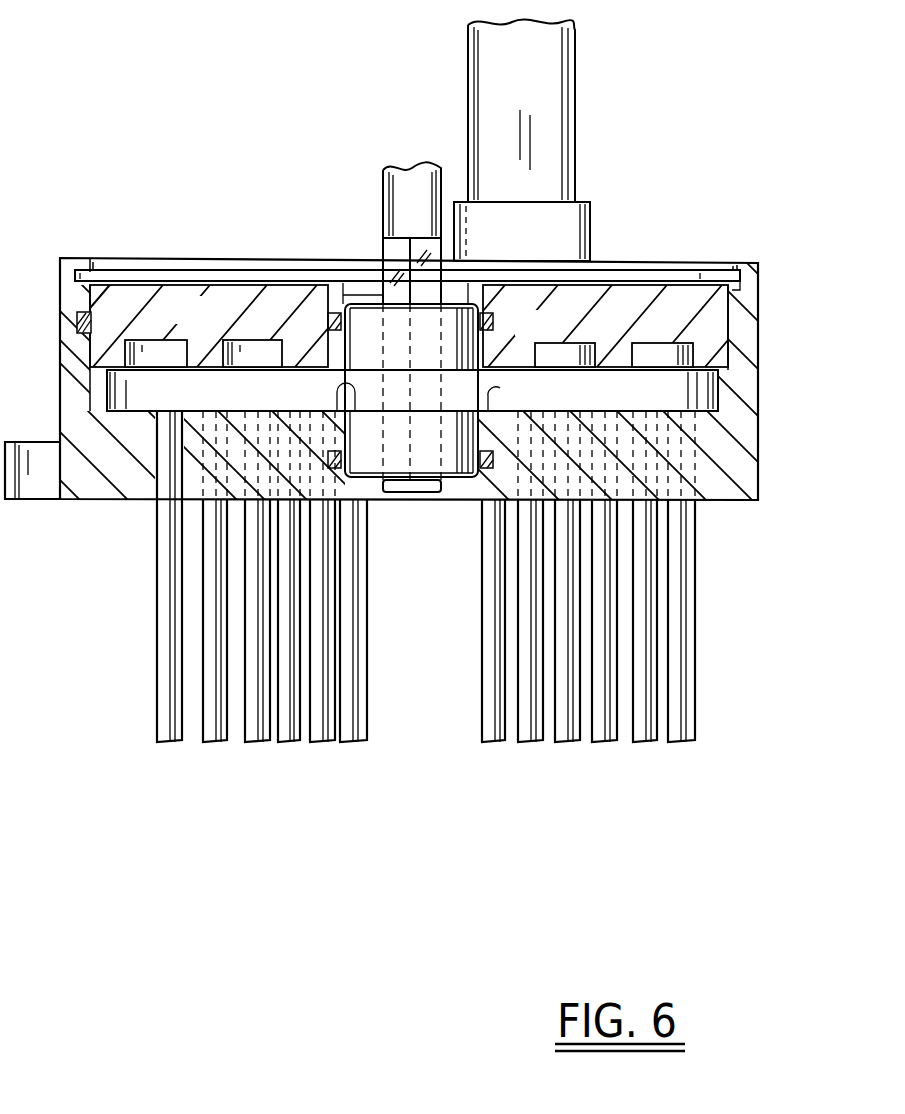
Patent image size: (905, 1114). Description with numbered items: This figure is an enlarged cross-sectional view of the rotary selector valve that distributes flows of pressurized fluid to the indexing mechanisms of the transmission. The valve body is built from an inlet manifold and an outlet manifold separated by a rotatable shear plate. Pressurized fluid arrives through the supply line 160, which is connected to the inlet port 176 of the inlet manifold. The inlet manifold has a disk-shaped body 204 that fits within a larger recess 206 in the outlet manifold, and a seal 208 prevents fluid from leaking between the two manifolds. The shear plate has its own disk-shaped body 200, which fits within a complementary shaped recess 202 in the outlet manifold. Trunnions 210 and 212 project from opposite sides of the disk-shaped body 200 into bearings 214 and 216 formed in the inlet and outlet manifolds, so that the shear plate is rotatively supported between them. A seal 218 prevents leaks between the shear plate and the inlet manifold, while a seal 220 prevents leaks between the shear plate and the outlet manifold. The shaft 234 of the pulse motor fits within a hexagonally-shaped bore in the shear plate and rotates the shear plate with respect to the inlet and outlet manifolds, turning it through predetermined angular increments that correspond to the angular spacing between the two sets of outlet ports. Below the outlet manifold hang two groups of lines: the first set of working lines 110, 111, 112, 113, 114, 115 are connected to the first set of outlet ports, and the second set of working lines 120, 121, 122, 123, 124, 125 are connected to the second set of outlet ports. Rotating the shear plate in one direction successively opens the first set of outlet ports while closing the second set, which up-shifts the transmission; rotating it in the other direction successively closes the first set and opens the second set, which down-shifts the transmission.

The first set of working lines 110 is at (168, 746).
The first set of working lines 111 is at (213, 746).
The first set of working lines 112 is at (258, 746).
The first set of working lines 113 is at (288, 746).
The first set of working lines 114 is at (322, 746).
The first set of working lines 115 is at (356, 746).
The second set of working lines 120 is at (497, 746).
The second set of working lines 121 is at (528, 746).
The second set of working lines 122 is at (570, 746).
The second set of working lines 123 is at (604, 746).
The second set of working lines 124 is at (645, 746).
The second set of working lines 125 is at (680, 746).
The supply line 160 is at (468, 66).
The inlet port 176 is at (575, 235).
The disk-shaped body 200 is at (247, 402).
The recess 202 is at (726, 392).
The disk-shaped body 204 is at (217, 326).
The recess 206 is at (740, 304).
The seal 208 is at (78, 318).
The trunnion 210 is at (488, 348).
The trunnion 212 is at (488, 430).
The bearing 214 is at (350, 299).
The bearing 216 is at (355, 412).
The seal 218 is at (343, 323).
The seal 220 is at (340, 455).
The shaft 234 is at (383, 188).